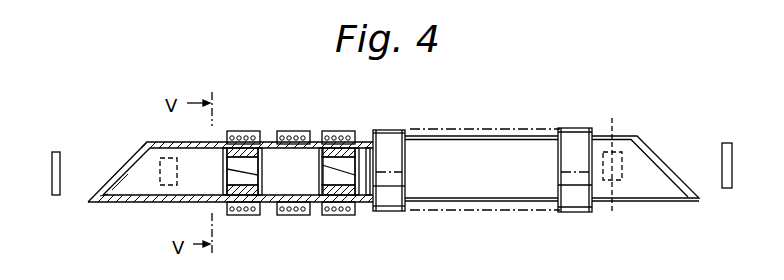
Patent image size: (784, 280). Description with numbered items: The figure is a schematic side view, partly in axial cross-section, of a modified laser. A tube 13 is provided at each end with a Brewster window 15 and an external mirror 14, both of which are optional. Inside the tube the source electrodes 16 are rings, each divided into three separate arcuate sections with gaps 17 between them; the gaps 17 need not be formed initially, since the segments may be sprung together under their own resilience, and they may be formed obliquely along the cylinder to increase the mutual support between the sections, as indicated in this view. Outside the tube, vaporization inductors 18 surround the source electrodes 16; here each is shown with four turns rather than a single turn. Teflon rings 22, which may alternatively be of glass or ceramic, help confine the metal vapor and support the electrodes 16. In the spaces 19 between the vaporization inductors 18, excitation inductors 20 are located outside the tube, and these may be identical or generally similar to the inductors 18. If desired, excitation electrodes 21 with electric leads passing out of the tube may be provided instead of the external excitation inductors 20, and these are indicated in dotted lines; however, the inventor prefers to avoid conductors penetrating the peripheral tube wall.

The tube 13 is at (115, 203).
The external mirror 14 is at (52, 163).
The Brewster window 15 is at (124, 168).
The source electrode 16 is at (232, 180).
The gap 17 is at (323, 177).
The vaporization inductor 18 is at (238, 130).
The space 19 is at (303, 187).
The excitation inductor 20 is at (293, 130).
The excitation electrode 21 is at (160, 190).
The Teflon ring 22 is at (369, 187).